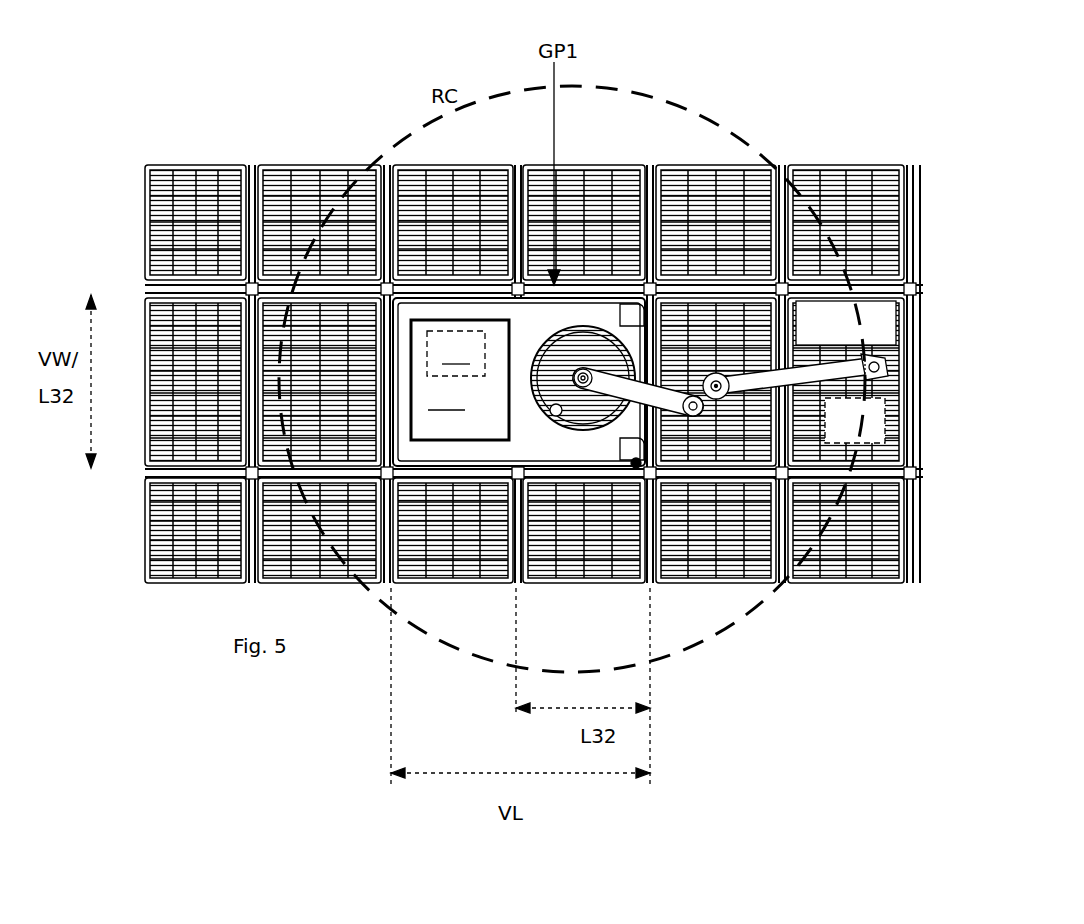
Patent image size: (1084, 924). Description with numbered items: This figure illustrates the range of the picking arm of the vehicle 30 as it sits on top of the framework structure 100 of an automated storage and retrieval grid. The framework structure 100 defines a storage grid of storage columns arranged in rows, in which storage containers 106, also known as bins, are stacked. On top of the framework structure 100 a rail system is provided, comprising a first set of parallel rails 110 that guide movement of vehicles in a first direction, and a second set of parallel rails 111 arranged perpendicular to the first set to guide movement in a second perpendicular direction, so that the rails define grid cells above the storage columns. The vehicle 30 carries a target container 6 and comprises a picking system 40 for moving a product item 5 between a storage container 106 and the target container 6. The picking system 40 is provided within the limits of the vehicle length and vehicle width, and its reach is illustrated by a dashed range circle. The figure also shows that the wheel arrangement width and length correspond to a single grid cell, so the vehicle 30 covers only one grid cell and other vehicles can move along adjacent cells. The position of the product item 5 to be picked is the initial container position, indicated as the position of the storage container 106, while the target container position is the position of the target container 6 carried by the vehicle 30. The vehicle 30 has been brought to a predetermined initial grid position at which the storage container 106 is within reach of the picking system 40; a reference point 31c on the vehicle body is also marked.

The framework structure 100 is at (138, 126).
The second set of parallel rails 111 is at (163, 278).
The first set of parallel rails 110 is at (633, 175).
The vehicle 30 is at (519, 393).
The target container 6 is at (462, 415).
The reference point 31c is at (627, 462).
The picking system 40 is at (716, 440).
The product item 5 is at (870, 350).
The storage container 106 is at (857, 332).